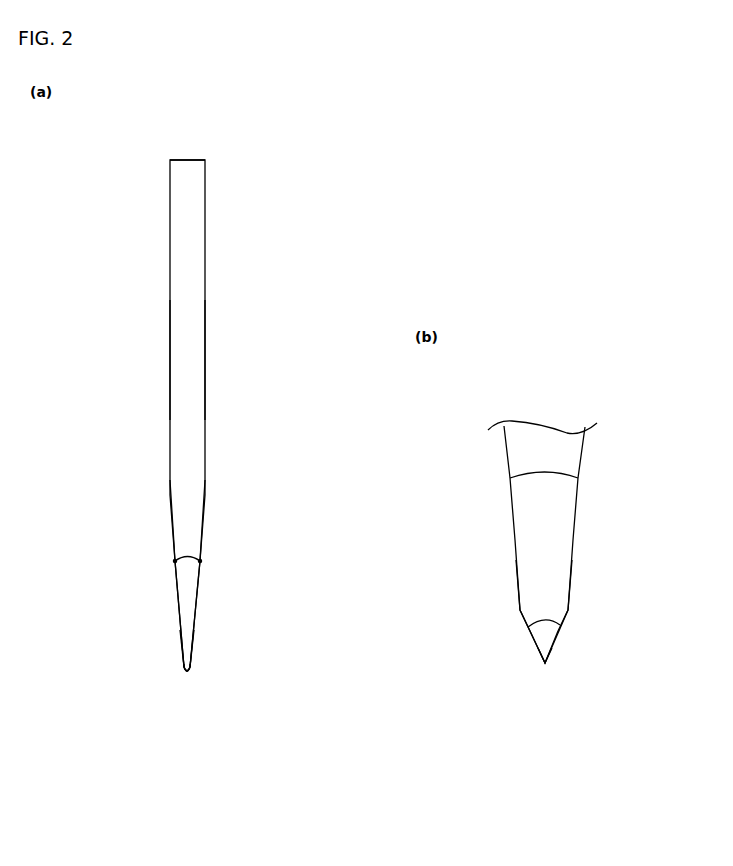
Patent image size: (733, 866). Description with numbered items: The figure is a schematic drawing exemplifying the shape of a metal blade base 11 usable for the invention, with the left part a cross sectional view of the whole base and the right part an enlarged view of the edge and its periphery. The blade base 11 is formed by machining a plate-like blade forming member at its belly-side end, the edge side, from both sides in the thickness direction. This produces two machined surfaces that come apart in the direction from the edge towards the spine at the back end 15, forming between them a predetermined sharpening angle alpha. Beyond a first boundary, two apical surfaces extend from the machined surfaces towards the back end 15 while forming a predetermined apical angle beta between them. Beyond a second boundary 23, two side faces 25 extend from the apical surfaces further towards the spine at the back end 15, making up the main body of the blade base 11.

The blade base 11 is at (159, 197).
The back end 15 is at (188, 160).
The second boundary 23 is at (170, 522).
The side faces 25 is at (170, 353).